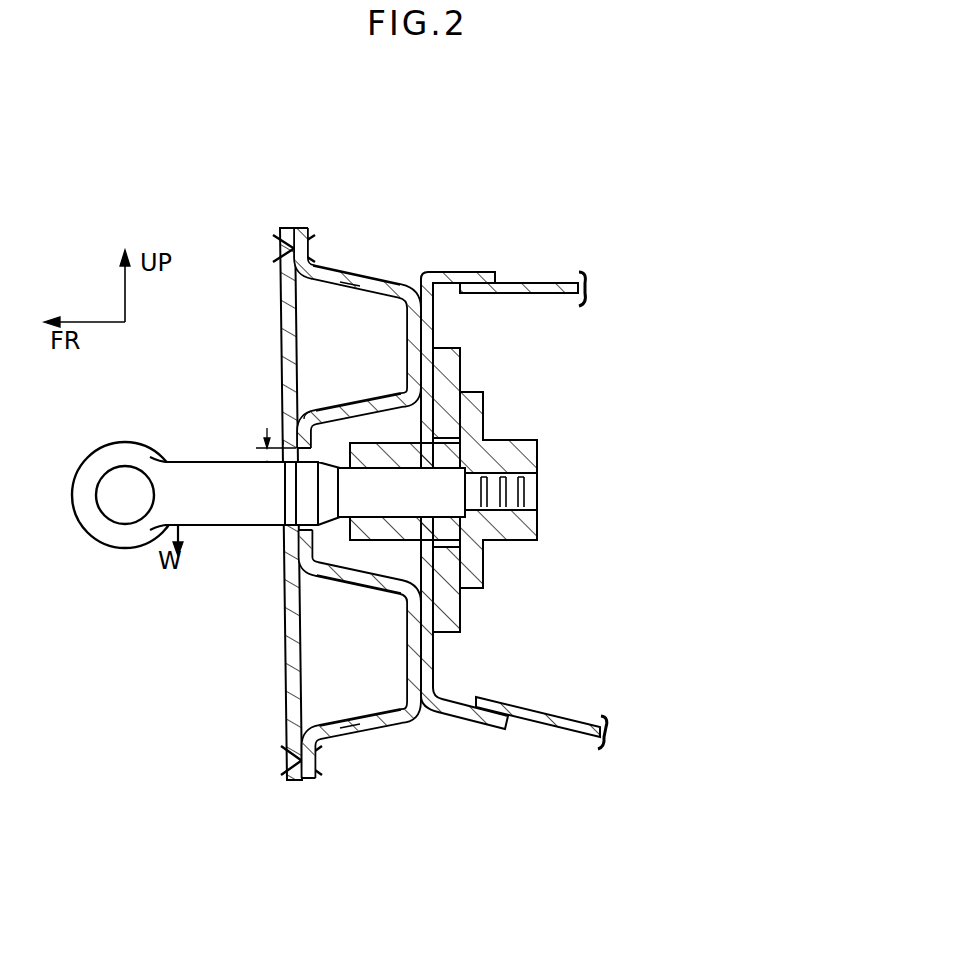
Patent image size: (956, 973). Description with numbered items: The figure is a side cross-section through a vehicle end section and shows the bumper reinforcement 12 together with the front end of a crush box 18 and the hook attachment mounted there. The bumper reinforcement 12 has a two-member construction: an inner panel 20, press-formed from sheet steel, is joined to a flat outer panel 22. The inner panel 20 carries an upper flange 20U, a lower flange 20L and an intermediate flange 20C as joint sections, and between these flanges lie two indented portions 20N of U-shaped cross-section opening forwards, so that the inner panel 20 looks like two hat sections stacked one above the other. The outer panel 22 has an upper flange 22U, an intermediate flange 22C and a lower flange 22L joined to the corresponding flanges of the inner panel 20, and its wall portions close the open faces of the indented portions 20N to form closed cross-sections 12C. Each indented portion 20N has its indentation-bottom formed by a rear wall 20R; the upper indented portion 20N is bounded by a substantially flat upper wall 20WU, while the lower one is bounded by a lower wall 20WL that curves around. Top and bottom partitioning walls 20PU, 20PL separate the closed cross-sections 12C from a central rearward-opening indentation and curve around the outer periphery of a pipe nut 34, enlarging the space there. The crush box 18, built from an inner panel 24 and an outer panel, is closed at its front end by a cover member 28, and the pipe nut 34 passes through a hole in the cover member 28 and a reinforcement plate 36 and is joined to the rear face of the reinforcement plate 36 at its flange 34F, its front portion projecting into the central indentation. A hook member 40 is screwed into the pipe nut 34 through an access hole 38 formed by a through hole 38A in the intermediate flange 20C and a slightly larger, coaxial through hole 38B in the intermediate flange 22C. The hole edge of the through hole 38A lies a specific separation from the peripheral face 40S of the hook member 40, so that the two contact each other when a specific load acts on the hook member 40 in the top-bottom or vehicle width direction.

The bumper reinforcement 12 is at (299, 226).
The closed cross-section 12C is at (376, 354).
The outer panel 22 is at (272, 330).
The upper flange 22U is at (281, 234).
The lower flange 22L is at (290, 778).
The intermediate flange 22C is at (282, 440).
The inner panel 20 is at (506, 270).
The upper flange 20U is at (310, 233).
The lower flange 20L is at (308, 780).
The indented portion 20N is at (358, 295).
The upper wall 20WU is at (411, 273).
The lower wall 20WL is at (392, 719).
The partitioning wall 20PU is at (343, 408).
The partitioning wall 20PL is at (331, 575).
The rear wall 20R is at (440, 318).
The intermediate flange 20C is at (293, 416).
The cover member 28 is at (583, 272).
The reinforcement plate 36 is at (458, 362).
The pipe nut 34 is at (466, 492).
The flange 34F is at (475, 420).
The hook member 40 is at (100, 560).
The peripheral face 40S is at (220, 462).
The access hole 38 is at (235, 575).
The through hole 38A is at (277, 540).
The through hole 38B is at (301, 535).
The crush box 18 is at (541, 761).
The inner panel 24 is at (573, 747).